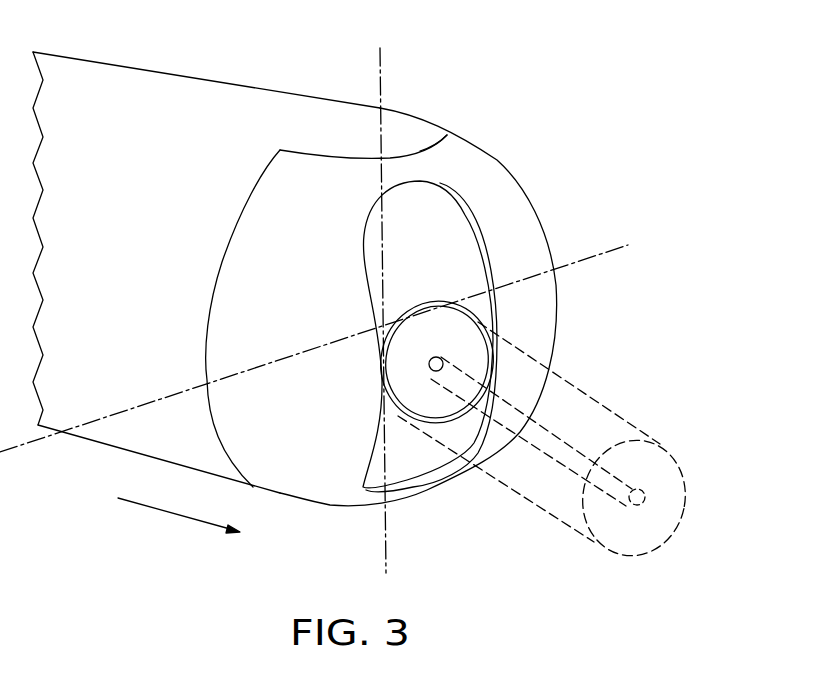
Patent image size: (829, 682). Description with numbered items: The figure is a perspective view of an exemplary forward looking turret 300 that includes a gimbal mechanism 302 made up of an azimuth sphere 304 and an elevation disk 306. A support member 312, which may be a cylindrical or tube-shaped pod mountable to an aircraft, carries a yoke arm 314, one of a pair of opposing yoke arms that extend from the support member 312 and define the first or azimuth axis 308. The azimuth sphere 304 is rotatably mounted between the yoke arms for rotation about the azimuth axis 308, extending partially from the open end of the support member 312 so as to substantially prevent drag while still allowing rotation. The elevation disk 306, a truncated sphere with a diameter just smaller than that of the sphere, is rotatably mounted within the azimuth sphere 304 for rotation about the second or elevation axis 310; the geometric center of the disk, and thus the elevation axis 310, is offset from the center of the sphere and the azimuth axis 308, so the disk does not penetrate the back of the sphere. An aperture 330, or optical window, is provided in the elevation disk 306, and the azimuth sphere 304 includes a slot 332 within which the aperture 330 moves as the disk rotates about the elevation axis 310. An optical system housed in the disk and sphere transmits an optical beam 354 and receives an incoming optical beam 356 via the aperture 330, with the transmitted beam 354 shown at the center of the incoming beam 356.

The forward looking turret 300 is at (579, 48).
The gimbal mechanism 302 is at (348, 246).
The azimuth sphere 304 is at (540, 222).
The elevation disk 306 is at (447, 226).
The azimuth (AZ) axis 308 is at (380, 62).
The elevation (EL) axis 310 is at (592, 256).
The support member 312 is at (138, 67).
The yoke arm 314 is at (447, 135).
The aperture 330 is at (445, 302).
The slot 332 is at (446, 191).
The transmitted optical beam 354 is at (644, 489).
The incoming optical beam 356 is at (600, 398).